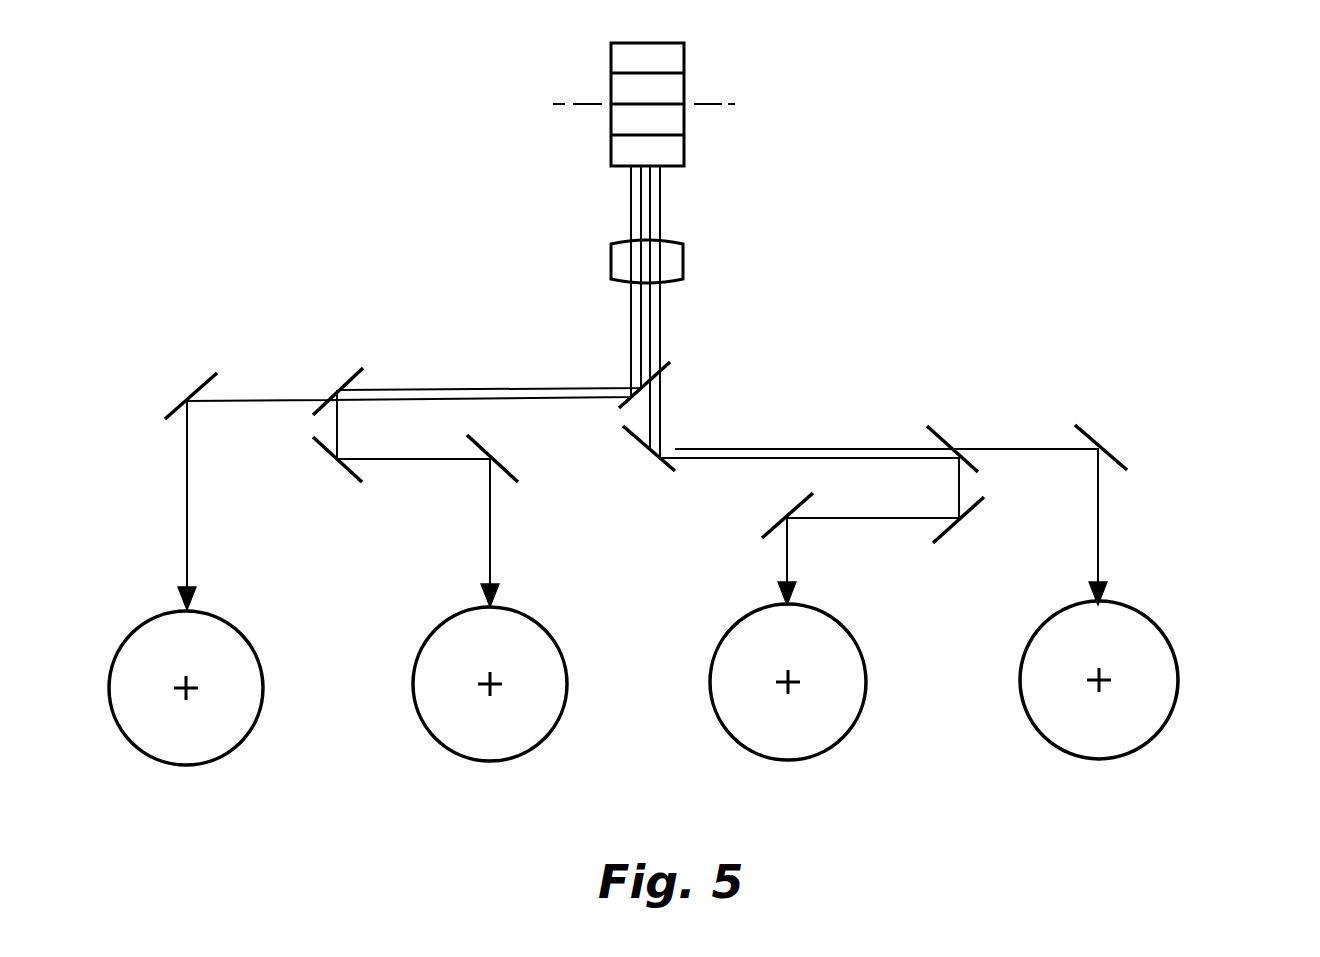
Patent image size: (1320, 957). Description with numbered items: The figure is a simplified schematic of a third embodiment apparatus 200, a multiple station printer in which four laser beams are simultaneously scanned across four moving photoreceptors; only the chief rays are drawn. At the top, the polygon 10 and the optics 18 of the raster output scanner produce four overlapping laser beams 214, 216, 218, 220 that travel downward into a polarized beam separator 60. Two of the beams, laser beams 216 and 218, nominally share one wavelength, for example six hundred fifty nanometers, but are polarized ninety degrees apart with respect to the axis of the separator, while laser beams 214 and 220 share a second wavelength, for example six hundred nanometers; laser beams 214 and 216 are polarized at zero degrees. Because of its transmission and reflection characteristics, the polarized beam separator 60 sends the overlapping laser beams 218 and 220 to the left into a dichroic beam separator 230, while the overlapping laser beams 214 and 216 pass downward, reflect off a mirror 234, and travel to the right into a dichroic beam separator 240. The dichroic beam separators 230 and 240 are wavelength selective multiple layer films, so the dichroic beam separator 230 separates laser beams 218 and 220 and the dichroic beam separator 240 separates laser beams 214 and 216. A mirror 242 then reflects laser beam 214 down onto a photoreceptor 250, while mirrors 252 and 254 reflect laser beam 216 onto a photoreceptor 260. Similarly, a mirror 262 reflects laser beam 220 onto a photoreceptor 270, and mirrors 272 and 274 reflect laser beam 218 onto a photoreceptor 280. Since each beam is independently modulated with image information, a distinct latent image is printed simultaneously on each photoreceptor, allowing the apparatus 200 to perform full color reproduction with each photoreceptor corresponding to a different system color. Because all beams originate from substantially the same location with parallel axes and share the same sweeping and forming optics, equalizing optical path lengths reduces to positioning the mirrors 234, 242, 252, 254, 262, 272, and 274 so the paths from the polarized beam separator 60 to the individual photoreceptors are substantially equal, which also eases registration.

The polygon 10 is at (643, 58).
The optics 18 is at (673, 253).
The polarized beam separator 60 is at (669, 364).
The apparatus 200 is at (1003, 83).
The laser beam 214 is at (652, 345).
The laser beam 216 is at (662, 318).
The laser beam 218 is at (632, 320).
The laser beam 220 is at (630, 360).
The dichroic beam separator 230 is at (355, 374).
The mirror 234 is at (651, 463).
The dichroic beam separator 240 is at (938, 432).
The mirror 242 is at (1122, 460).
The photoreceptor 250 is at (1162, 683).
The mirror 252 is at (968, 510).
The mirror 254 is at (760, 520).
The photoreceptor 260 is at (848, 685).
The mirror 262 is at (205, 383).
The photoreceptor 270 is at (245, 690).
The mirror 272 is at (345, 469).
The mirror 274 is at (498, 463).
The photoreceptor 280 is at (550, 688).